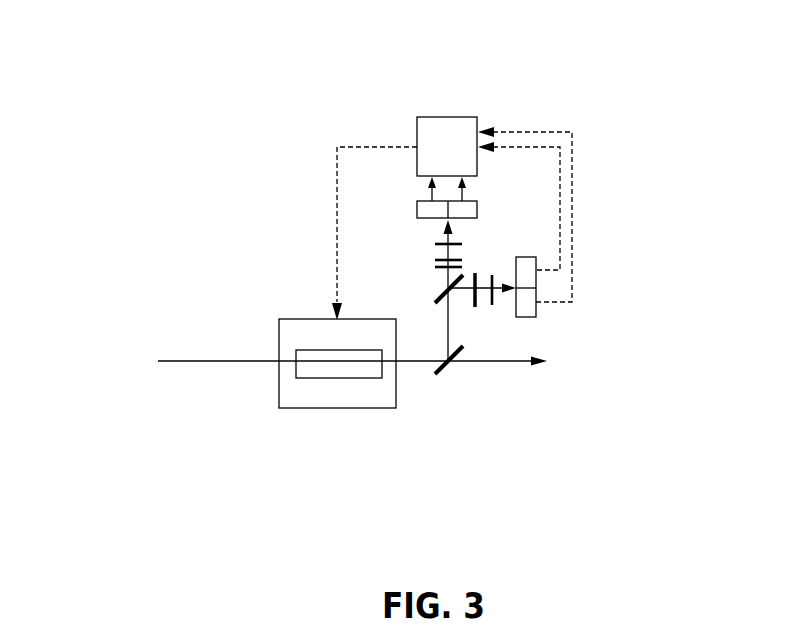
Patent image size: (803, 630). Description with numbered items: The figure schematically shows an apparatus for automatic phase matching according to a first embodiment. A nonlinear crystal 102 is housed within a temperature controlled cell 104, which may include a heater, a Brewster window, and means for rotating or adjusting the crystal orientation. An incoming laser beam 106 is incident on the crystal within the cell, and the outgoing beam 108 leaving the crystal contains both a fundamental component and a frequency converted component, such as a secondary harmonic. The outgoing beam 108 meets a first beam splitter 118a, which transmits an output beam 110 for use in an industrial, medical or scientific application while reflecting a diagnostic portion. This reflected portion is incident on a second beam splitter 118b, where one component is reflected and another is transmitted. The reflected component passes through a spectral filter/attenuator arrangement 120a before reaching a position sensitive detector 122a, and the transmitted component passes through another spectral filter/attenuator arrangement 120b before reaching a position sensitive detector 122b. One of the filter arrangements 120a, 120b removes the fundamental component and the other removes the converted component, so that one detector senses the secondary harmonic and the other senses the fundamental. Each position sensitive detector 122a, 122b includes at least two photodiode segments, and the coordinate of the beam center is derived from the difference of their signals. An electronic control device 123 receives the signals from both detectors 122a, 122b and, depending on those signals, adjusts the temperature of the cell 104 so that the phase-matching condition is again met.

The nonlinear crystal 102 is at (338, 378).
The temperature controlled cell 104 is at (279, 339).
The incoming laser beam 106 is at (153, 354).
The outgoing beam 108 is at (413, 376).
The output beam 110 is at (512, 376).
The first beam splitter 118a is at (450, 364).
The second beam splitter 118b is at (453, 295).
The spectral filter/attenuator arrangement 120a is at (475, 279).
The spectral filter/attenuator arrangement 120b is at (433, 243).
The position sensitive detector 122a is at (536, 288).
The position sensitive detector 122b is at (477, 210).
The electronic control device 123 is at (430, 116).